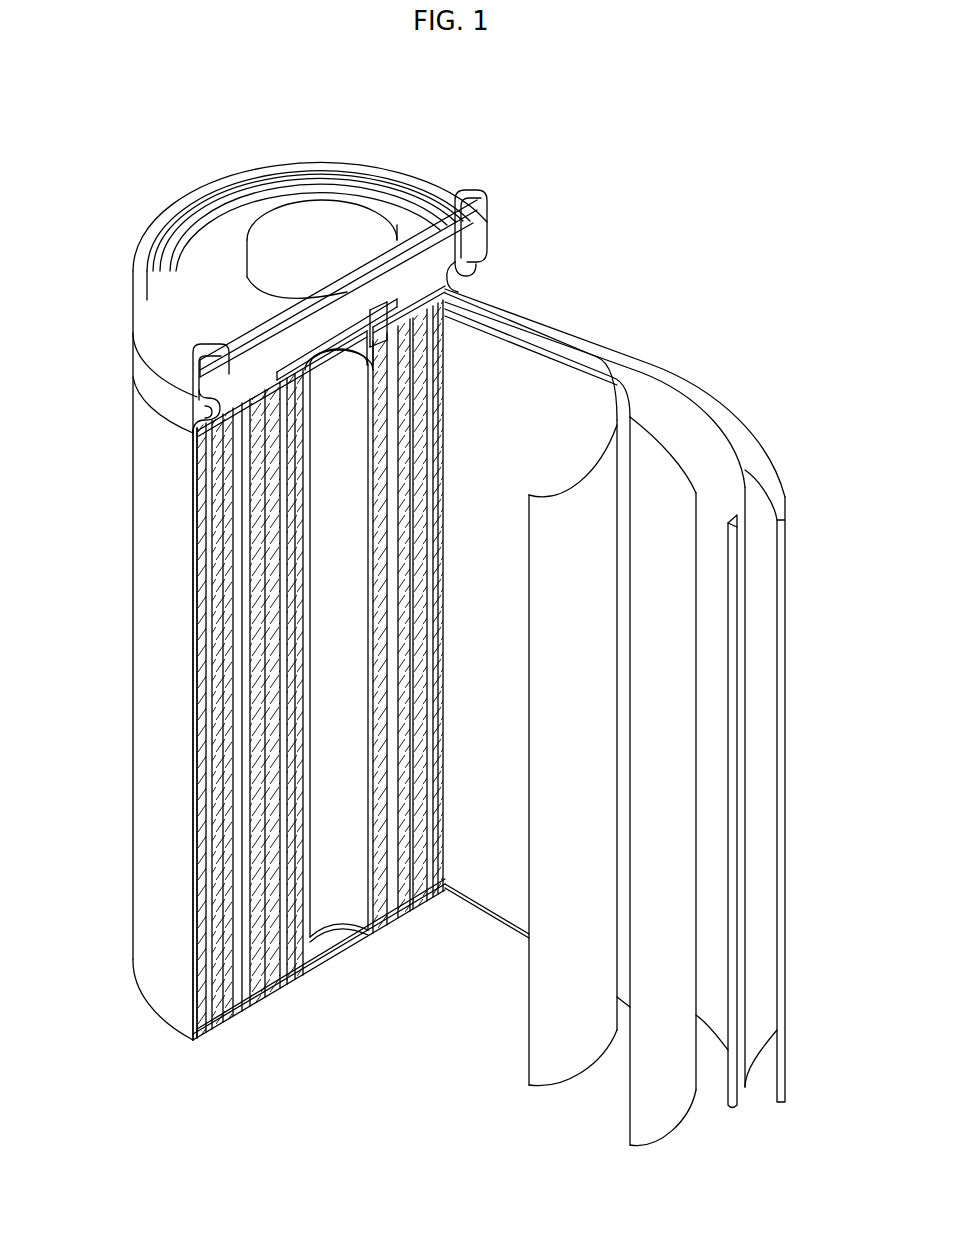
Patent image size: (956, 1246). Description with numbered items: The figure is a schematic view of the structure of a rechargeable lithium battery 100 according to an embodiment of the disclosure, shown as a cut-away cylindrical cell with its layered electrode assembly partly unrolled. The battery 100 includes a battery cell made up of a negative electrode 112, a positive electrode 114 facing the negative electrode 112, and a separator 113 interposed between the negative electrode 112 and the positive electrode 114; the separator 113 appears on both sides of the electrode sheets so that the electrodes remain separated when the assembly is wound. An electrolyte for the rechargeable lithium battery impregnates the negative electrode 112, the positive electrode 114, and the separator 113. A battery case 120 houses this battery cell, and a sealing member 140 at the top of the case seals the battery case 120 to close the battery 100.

The rechargeable lithium battery 100 is at (478, 152).
The battery case 120 is at (142, 646).
The sealing member 140 is at (292, 215).
The separator 113 is at (502, 353).
The positive electrode 114 is at (633, 420).
The negative electrode 112 is at (745, 447).